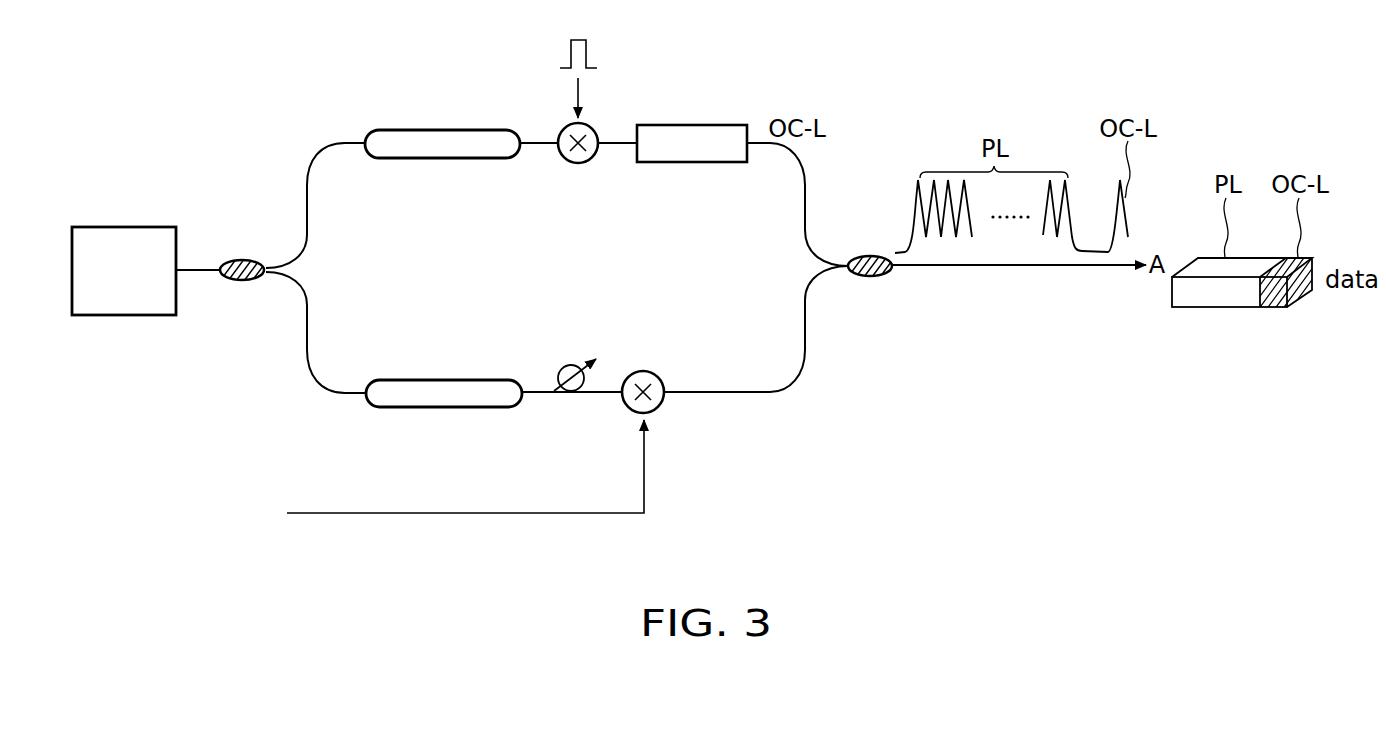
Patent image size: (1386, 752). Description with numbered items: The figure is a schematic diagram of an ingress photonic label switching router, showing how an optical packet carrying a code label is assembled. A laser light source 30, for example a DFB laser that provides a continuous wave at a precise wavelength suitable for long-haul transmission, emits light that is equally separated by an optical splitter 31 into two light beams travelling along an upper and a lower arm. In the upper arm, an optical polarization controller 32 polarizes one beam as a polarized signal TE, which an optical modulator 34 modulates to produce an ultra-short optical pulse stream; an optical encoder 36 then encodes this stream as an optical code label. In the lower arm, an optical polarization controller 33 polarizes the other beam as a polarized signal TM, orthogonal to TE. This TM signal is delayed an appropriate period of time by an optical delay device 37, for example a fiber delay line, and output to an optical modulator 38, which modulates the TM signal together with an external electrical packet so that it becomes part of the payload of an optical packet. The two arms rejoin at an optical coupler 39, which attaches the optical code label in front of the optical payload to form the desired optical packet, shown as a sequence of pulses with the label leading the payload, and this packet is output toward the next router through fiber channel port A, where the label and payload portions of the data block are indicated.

The laser light source 30 is at (158, 227).
The optical splitter 31 is at (248, 262).
The optical polarization controller 32 is at (443, 130).
The optical polarization controller 33 is at (445, 409).
The optical modulator 34 is at (581, 164).
The optical encoder 36 is at (692, 125).
The optical delay device 37 is at (571, 365).
The optical modulator 38 is at (643, 371).
The optical coupler 39 is at (869, 257).